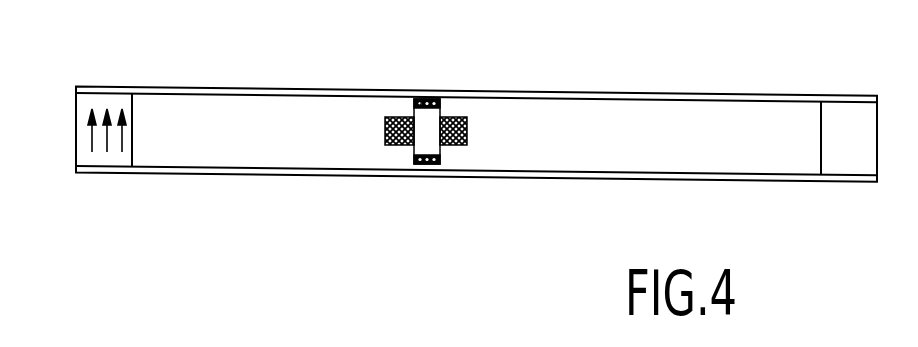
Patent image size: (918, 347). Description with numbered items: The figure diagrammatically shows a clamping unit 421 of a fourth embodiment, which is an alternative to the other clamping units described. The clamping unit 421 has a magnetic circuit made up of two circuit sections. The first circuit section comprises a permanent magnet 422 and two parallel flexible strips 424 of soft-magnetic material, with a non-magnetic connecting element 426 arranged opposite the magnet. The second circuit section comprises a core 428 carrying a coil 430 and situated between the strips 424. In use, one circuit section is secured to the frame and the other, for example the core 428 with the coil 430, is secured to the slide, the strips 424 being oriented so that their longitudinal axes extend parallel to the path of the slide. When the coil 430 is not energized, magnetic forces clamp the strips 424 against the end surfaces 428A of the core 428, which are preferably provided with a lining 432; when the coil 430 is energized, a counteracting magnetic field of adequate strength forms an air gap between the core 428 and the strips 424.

The clamping unit 421 is at (150, 223).
The permanent magnet 422 is at (102, 105).
The flexible strips 424 is at (207, 87).
The non-magnetic connecting element 426 is at (847, 112).
The core 428 is at (427, 164).
The end surfaces 428A is at (441, 106).
The coil 430 is at (452, 146).
The lining 432 is at (419, 99).